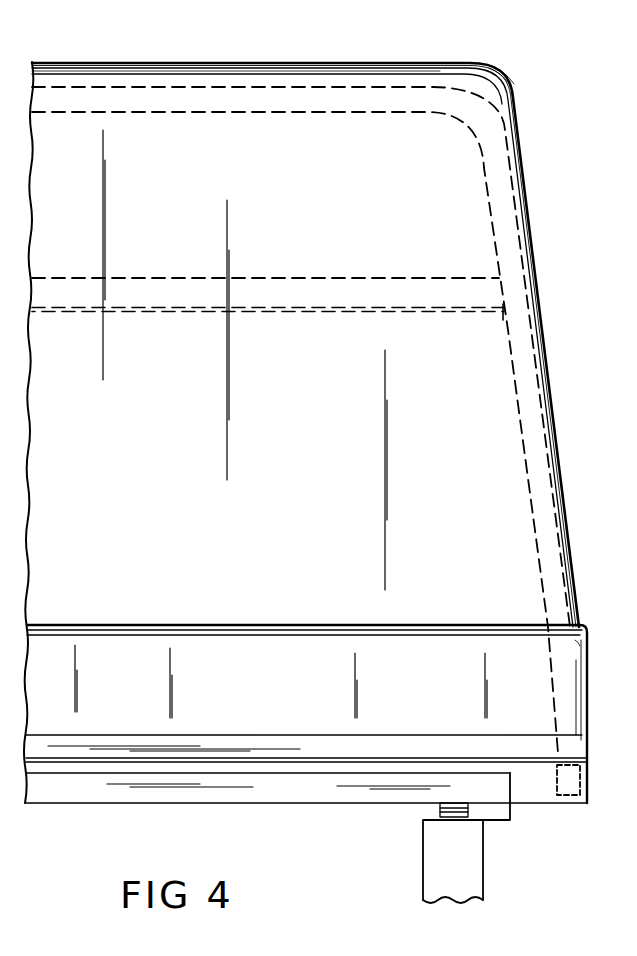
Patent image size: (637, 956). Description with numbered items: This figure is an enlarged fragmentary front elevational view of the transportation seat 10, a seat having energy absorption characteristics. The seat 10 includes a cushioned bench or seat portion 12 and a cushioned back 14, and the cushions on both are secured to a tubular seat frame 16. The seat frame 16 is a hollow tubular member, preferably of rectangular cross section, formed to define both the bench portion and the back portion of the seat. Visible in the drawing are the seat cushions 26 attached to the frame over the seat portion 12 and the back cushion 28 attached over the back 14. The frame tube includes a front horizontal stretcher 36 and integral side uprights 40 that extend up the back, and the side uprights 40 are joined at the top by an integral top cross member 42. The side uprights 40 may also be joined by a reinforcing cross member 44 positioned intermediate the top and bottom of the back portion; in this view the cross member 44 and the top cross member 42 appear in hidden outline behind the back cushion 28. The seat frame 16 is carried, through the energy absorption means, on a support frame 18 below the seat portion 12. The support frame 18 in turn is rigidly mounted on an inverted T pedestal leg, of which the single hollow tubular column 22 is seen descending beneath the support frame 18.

The transportation seat 10 is at (532, 146).
The seat portion 12 is at (331, 626).
The back 14 is at (335, 436).
The seat frame 16 is at (514, 290).
The support frame 18 is at (195, 803).
The tubular column 22 is at (435, 863).
The seat cushions 26 is at (247, 694).
The back cushion 28 is at (147, 404).
The front horizontal stretcher 36 is at (583, 778).
The side uprights 40 is at (538, 415).
The top cross member 42 is at (194, 92).
The reinforcing cross member 44 is at (312, 288).